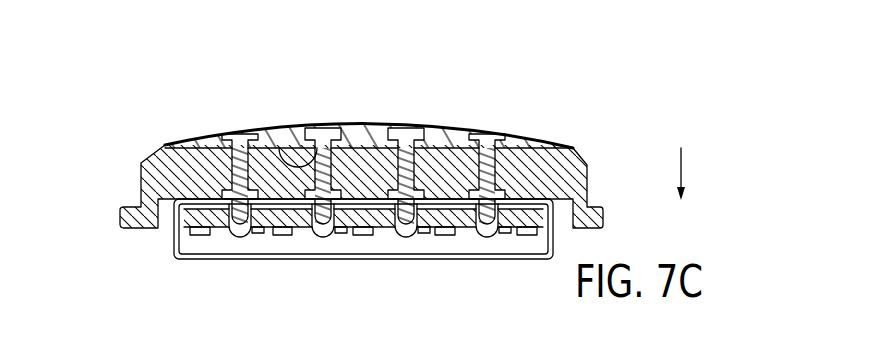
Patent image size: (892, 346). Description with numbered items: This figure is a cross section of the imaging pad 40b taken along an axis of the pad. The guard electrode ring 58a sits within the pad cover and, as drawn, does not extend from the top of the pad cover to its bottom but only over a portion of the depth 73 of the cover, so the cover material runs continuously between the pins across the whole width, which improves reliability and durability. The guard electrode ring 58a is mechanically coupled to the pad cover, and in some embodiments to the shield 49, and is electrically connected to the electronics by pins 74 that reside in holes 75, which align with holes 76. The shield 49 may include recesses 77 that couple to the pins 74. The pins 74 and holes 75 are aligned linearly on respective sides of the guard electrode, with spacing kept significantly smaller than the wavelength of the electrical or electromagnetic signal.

The lens module assembly 40b is at (170, 70).
The guard electrode ring 58a is at (200, 146).
The pins 74 is at (246, 137).
The holes 75 is at (292, 158).
The holes 76 is at (383, 140).
The recesses 77 is at (482, 239).
The shield 49 is at (356, 254).
The depth 73 is at (681, 170).